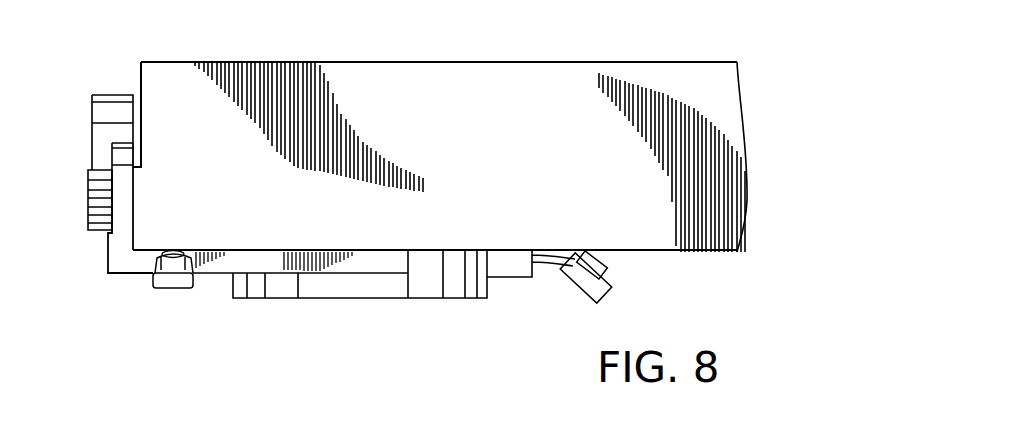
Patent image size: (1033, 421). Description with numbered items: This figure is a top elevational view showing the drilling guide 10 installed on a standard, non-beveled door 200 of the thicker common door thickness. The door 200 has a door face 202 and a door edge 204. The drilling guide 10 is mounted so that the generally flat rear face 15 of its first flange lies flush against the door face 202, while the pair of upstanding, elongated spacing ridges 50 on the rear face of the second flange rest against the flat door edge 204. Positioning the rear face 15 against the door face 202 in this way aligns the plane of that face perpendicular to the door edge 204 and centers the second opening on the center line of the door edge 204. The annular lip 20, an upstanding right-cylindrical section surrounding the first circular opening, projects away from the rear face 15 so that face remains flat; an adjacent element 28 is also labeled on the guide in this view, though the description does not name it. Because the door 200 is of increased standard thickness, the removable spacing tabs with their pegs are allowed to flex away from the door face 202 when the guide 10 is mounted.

The drilling guide 10 is at (122, 233).
The rear face 15 is at (500, 249).
The annular lip 20 is at (472, 287).
The fastener block 28 is at (92, 118).
The spacing ridges 50 is at (141, 168).
The door 200 is at (523, 132).
The door face 202 is at (303, 248).
The door edge 204 is at (140, 78).